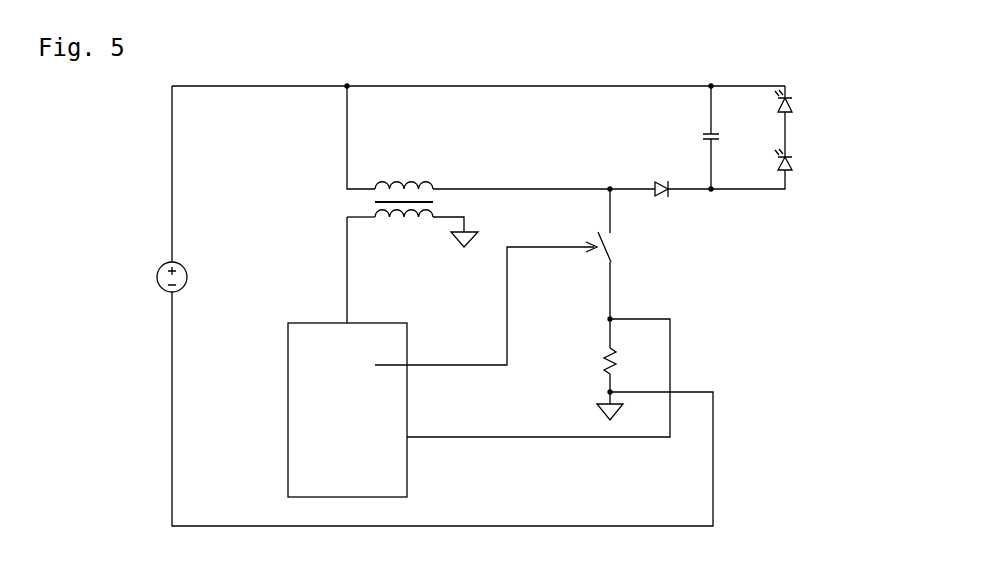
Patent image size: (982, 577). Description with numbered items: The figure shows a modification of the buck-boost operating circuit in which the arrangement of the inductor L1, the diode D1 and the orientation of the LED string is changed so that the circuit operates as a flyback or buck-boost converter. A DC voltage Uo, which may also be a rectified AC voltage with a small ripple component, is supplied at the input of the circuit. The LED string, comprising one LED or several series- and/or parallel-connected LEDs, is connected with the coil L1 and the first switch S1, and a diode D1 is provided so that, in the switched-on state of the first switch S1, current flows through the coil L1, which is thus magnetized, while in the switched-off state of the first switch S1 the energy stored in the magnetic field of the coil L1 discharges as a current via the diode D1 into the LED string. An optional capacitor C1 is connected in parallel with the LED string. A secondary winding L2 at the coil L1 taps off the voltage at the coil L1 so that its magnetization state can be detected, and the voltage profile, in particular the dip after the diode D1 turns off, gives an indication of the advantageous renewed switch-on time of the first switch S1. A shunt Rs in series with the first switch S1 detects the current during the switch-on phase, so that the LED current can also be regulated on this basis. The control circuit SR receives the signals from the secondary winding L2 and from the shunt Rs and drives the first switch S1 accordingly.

The DC voltage Uo is at (158, 277).
The coil L1 is at (404, 181).
The secondary winding L2 is at (390, 222).
The capacitor C1 is at (701, 137).
The diode D1 is at (654, 178).
The LED string LED is at (798, 131).
The first switch S1 is at (620, 247).
The shunt Rs is at (599, 362).
The control circuit SR is at (347, 410).